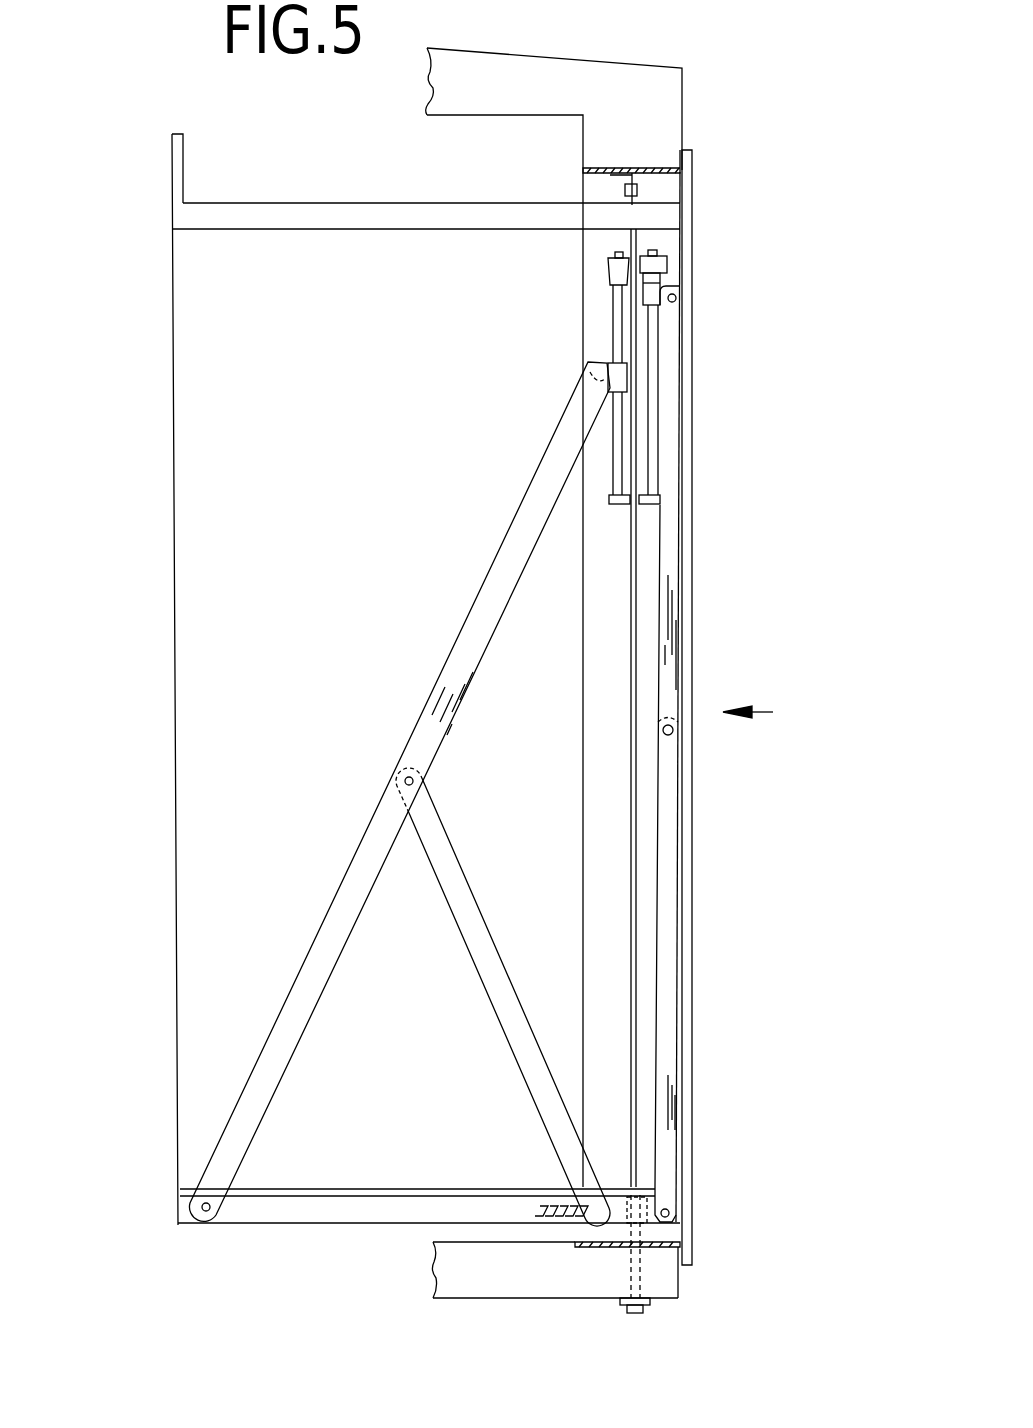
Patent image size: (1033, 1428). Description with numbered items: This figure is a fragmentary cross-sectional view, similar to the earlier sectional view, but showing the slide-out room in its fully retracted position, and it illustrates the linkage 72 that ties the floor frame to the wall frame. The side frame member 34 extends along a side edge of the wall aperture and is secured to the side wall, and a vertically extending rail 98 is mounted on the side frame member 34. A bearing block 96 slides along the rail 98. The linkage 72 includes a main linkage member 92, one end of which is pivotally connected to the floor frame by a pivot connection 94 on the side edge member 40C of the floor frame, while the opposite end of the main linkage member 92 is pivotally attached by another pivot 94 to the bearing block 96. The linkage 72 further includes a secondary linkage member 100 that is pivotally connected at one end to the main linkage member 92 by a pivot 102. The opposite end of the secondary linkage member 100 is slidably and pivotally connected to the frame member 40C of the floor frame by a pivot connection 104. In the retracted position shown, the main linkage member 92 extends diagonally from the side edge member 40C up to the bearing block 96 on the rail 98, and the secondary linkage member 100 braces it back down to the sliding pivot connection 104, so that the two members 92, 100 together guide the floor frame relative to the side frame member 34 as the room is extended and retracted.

The side frame member 34 is at (672, 242).
The vertically extending rail 98 is at (624, 330).
The bearing block 96 is at (620, 383).
The pivot connection 94 is at (600, 375).
The main linkage member 92 is at (508, 561).
The linkage 72 is at (456, 654).
The pivot 102 is at (415, 781).
The secondary linkage member 100 is at (475, 932).
The side edge member of floor frame 40C is at (369, 1190).
The pivot connection 104 is at (600, 1212).